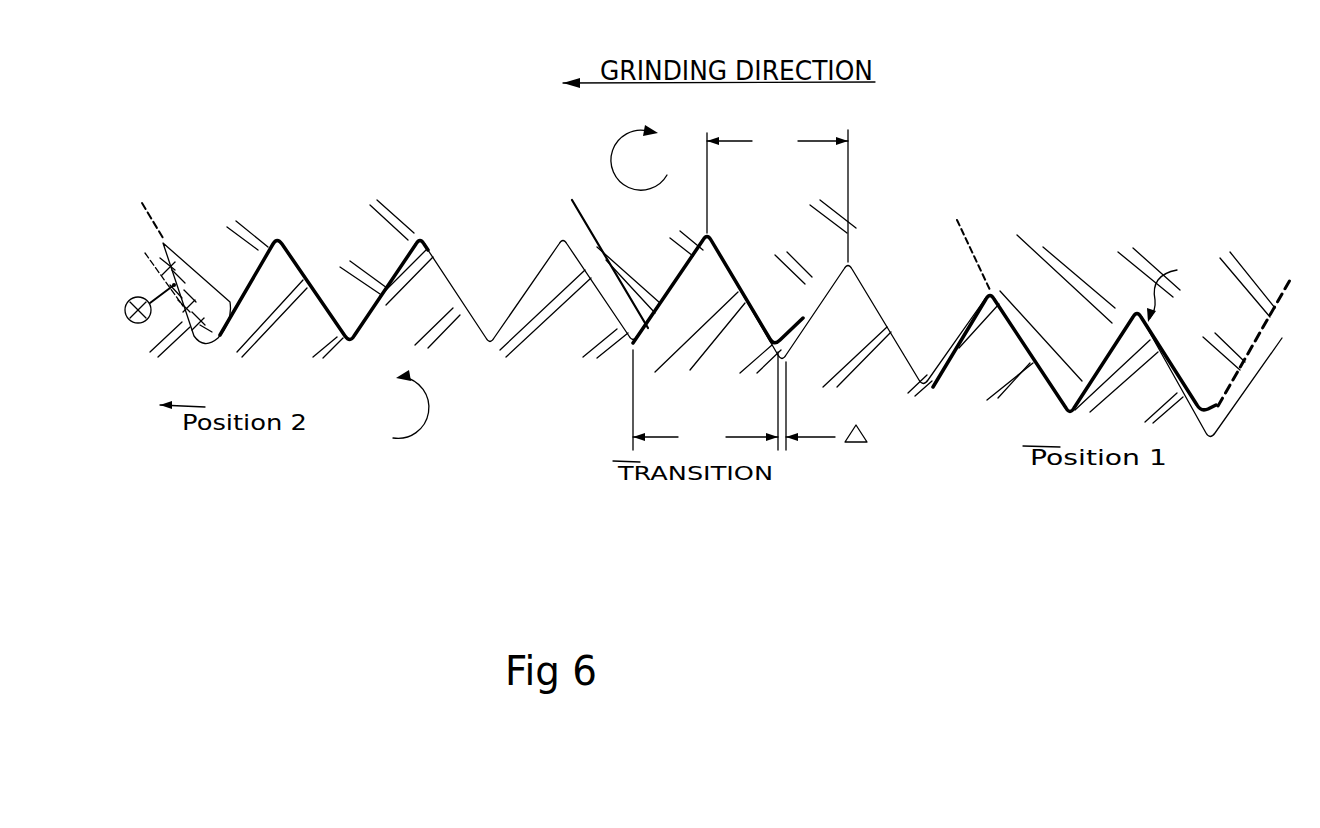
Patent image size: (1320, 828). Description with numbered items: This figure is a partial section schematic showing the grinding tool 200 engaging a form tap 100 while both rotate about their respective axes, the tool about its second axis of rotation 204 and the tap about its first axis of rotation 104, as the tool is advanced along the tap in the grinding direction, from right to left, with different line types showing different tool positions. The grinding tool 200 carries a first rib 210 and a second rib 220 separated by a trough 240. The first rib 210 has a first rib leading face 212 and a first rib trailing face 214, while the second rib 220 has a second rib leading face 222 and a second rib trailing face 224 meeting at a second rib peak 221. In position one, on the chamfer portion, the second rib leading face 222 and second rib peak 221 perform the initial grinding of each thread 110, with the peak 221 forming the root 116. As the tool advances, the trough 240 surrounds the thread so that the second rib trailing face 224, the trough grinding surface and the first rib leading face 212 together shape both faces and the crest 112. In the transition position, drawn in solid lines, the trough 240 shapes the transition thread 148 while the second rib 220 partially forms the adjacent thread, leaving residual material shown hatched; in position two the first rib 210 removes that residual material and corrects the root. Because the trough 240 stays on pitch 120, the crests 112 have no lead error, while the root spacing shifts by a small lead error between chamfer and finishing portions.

The form tap 100 is at (647, 503).
The first axis of rotation 104 is at (426, 416).
The threads 110 is at (306, 342).
The crest 112 is at (852, 262).
The root 116 is at (494, 347).
The pitch 120 is at (750, 290).
The transition thread 148 is at (700, 334).
The grinding tool 200 is at (755, 306).
The second axis of rotation 204 is at (652, 165).
The first rib 210 is at (797, 285).
The first rib leading face 212 is at (811, 284).
The first rib trailing face 214 is at (809, 287).
The second rib 220 is at (650, 301).
The second rib peak 221 is at (220, 333).
The second rib leading face 222 is at (573, 212).
The second rib trailing face 224 is at (672, 283).
The trough 240 is at (1171, 280).